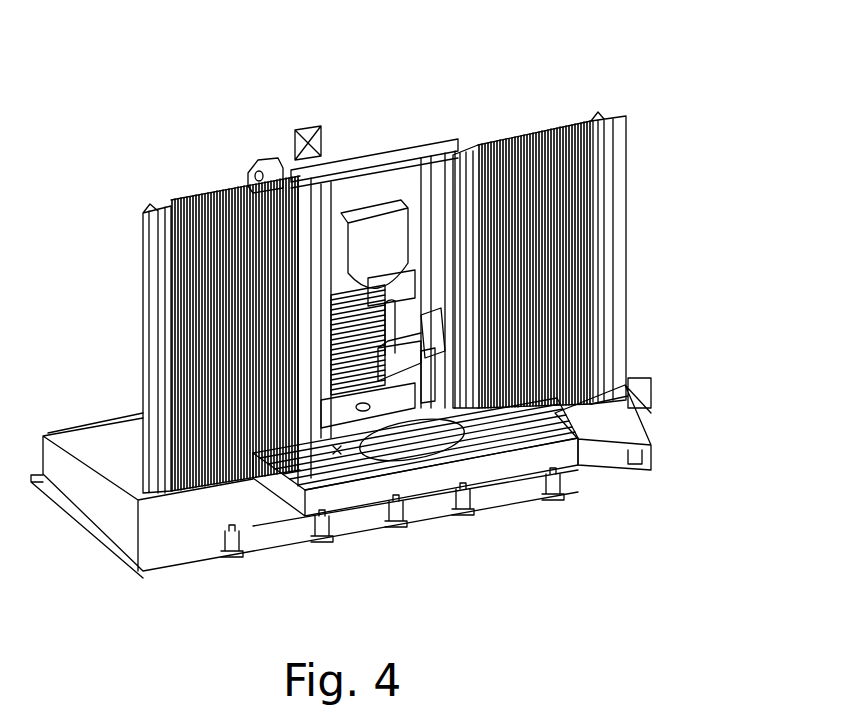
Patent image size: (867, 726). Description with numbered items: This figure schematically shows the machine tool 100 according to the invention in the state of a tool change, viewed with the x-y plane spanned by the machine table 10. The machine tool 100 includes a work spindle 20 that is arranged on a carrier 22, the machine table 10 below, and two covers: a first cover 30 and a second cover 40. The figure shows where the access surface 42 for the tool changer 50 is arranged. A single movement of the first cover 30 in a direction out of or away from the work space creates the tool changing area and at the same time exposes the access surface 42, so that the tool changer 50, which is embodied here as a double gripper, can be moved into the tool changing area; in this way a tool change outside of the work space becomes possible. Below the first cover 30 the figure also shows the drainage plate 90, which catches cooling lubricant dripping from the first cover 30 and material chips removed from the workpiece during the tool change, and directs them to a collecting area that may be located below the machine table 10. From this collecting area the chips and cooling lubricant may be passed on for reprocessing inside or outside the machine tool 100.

The machine tool 100 is at (106, 262).
The machine table 10 is at (555, 436).
The drainage plate 90 is at (390, 396).
The work spindle 20 is at (350, 248).
The carrier 22 is at (364, 200).
The first cover 30 is at (403, 195).
The second cover 40 is at (174, 194).
The access surface 42 is at (428, 269).
The tool changer 50 is at (432, 348).